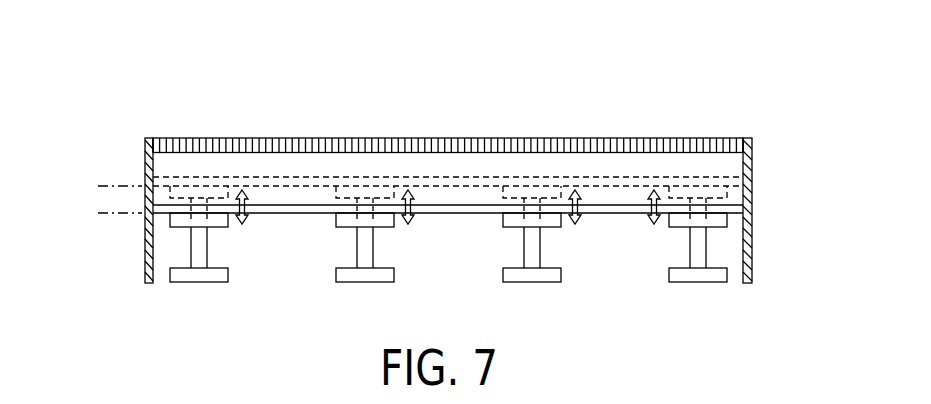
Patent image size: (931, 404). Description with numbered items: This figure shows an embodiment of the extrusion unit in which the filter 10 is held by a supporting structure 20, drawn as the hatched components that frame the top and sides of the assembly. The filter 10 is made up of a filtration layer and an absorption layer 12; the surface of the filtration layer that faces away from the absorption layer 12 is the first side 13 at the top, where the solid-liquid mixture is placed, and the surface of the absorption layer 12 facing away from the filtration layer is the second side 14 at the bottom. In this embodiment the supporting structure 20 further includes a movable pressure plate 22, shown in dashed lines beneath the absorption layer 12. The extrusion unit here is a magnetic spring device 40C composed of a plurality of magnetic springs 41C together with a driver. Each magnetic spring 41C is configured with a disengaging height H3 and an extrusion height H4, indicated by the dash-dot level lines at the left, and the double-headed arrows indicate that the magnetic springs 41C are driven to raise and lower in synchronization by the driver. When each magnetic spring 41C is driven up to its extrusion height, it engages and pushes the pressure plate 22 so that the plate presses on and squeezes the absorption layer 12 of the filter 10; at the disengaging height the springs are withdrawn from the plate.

The filter 10 is at (435, 191).
The absorption layer 12 is at (480, 168).
The first side 13 is at (292, 138).
The second side 14 is at (605, 208).
The supporting structure 20 is at (755, 238).
The movable pressure plate 22 is at (445, 180).
The magnetic spring device 40C is at (448, 277).
The magnetic spring 41C is at (208, 247).
The disengaging height H3 is at (102, 214).
The extrusion height H4 is at (102, 184).